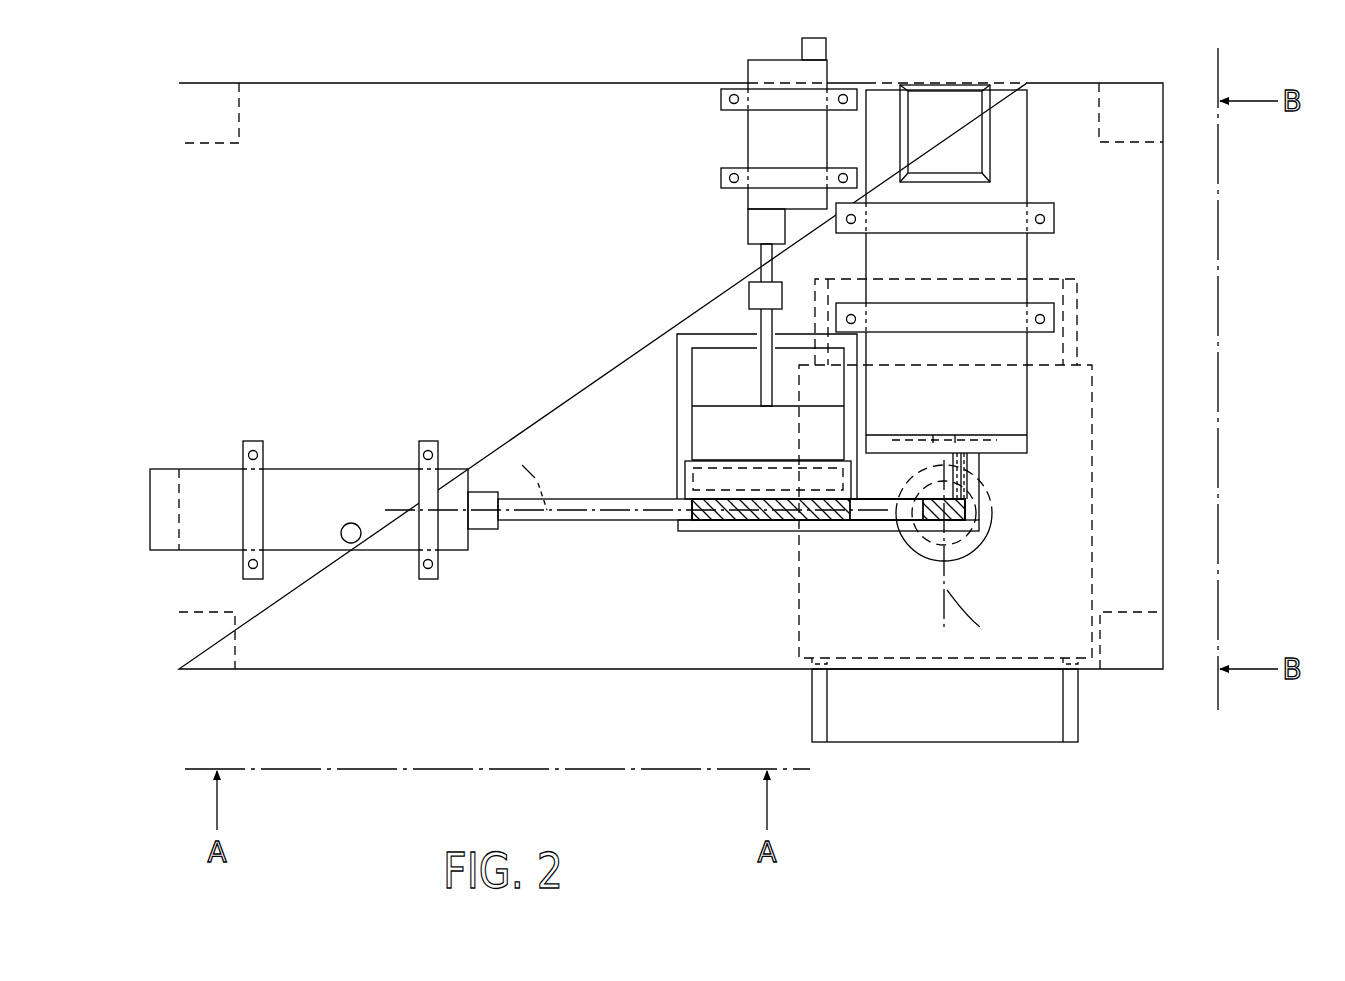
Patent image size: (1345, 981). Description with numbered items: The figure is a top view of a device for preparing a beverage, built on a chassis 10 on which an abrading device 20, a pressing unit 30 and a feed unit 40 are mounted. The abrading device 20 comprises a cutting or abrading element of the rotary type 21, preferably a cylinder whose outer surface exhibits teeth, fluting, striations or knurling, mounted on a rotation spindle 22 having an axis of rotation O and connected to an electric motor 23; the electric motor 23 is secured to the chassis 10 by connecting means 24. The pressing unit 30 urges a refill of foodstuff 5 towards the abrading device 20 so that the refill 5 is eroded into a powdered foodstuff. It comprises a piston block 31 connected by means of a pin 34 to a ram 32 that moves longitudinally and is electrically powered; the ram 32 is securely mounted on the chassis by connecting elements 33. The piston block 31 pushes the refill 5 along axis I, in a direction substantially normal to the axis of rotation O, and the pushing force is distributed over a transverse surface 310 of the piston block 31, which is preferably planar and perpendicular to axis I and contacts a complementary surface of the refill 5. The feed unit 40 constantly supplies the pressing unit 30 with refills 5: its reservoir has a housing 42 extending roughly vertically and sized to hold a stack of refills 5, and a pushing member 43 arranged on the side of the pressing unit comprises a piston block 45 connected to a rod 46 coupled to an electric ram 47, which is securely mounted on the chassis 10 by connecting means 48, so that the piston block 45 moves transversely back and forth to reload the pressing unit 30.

The chassis 10 is at (210, 243).
The abrading device 20 is at (967, 413).
The abrading element 21 is at (972, 530).
The rotation spindle 22 is at (985, 462).
The electric motor 23 is at (965, 318).
The connecting means 24 is at (995, 220).
The pressing unit 30 is at (521, 508).
The piston block 31 is at (732, 522).
The ram 32 is at (383, 533).
The connecting elements 33 is at (262, 447).
The pin 34 is at (623, 512).
The feed unit 40 is at (756, 254).
The housing 42 is at (726, 472).
The pushing member 43 is at (745, 285).
The piston block 45 is at (748, 428).
The rod 46 is at (760, 330).
The electric ram 47 is at (818, 120).
The connecting means 48 is at (767, 100).
The refill of foodstuff 5 is at (880, 520).
The transverse surface 310 is at (858, 531).